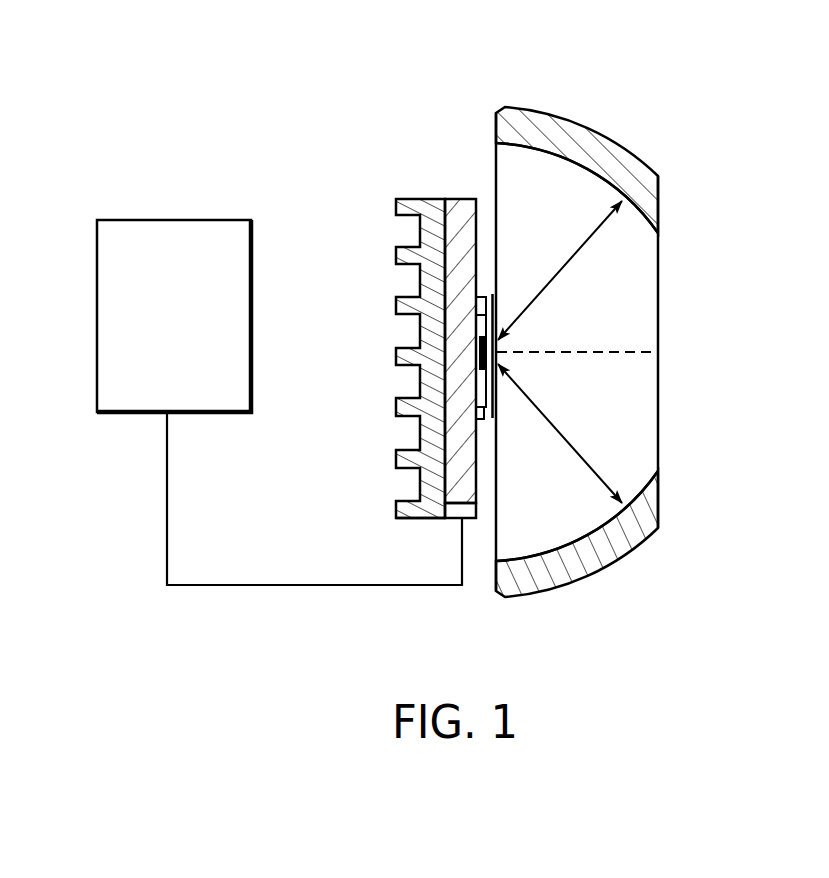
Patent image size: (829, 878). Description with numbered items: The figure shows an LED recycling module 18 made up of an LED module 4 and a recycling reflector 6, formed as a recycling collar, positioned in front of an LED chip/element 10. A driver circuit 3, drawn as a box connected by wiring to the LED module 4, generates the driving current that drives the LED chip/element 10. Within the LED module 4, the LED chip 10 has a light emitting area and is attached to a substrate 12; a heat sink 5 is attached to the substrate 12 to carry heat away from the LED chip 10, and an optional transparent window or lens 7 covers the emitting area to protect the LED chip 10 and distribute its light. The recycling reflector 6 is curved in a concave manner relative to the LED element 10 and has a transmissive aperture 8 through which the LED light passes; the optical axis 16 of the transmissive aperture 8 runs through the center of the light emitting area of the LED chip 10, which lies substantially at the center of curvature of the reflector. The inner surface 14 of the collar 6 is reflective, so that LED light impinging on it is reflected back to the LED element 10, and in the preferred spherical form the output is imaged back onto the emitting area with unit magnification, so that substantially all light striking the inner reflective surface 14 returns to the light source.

The LED recycling module 18 is at (326, 66).
The driver circuit 3 is at (97, 262).
The LED module 4 is at (445, 190).
The heat sink 5 is at (413, 520).
The recycling reflector 6 is at (597, 128).
The transparent window or lens 7 is at (492, 418).
The transmissive aperture 8 is at (673, 362).
The LED chip/element 10 is at (466, 354).
The substrate 12 is at (455, 520).
The inner surface 14 is at (538, 152).
The optical axis 16 is at (563, 352).